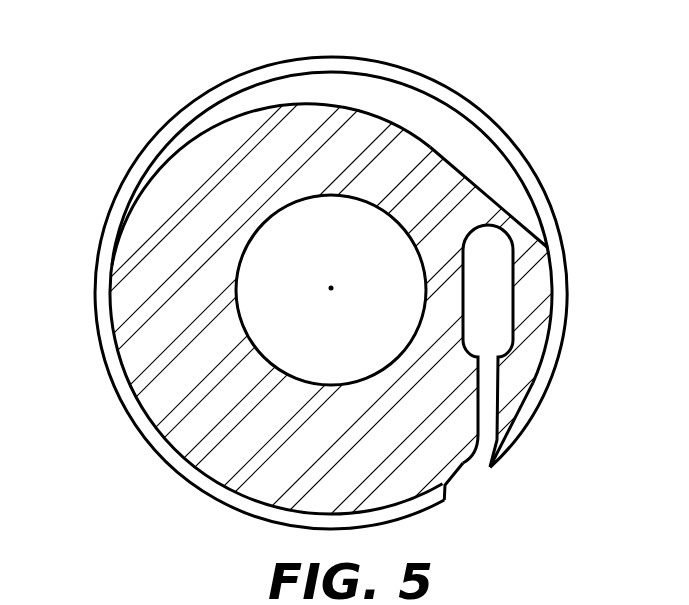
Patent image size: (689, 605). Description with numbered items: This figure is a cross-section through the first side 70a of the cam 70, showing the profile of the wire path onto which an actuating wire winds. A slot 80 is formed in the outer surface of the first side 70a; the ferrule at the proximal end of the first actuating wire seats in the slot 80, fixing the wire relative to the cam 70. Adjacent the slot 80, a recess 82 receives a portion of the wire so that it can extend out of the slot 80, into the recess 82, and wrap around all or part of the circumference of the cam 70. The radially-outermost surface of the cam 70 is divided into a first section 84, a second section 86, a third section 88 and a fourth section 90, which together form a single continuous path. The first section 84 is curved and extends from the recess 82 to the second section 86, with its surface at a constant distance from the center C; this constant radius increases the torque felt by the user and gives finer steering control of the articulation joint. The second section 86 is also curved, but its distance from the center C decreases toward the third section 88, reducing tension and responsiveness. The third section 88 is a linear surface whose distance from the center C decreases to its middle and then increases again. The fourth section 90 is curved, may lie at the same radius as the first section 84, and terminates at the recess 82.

The cam 70 is at (344, 305).
The first side 70a is at (344, 305).
The slot 80 is at (538, 346).
The recess 82 is at (492, 398).
The first section 84 is at (220, 501).
The second section 86 is at (331, 104).
The third section 88 is at (498, 200).
The fourth section 90 is at (553, 212).
The center C is at (331, 289).